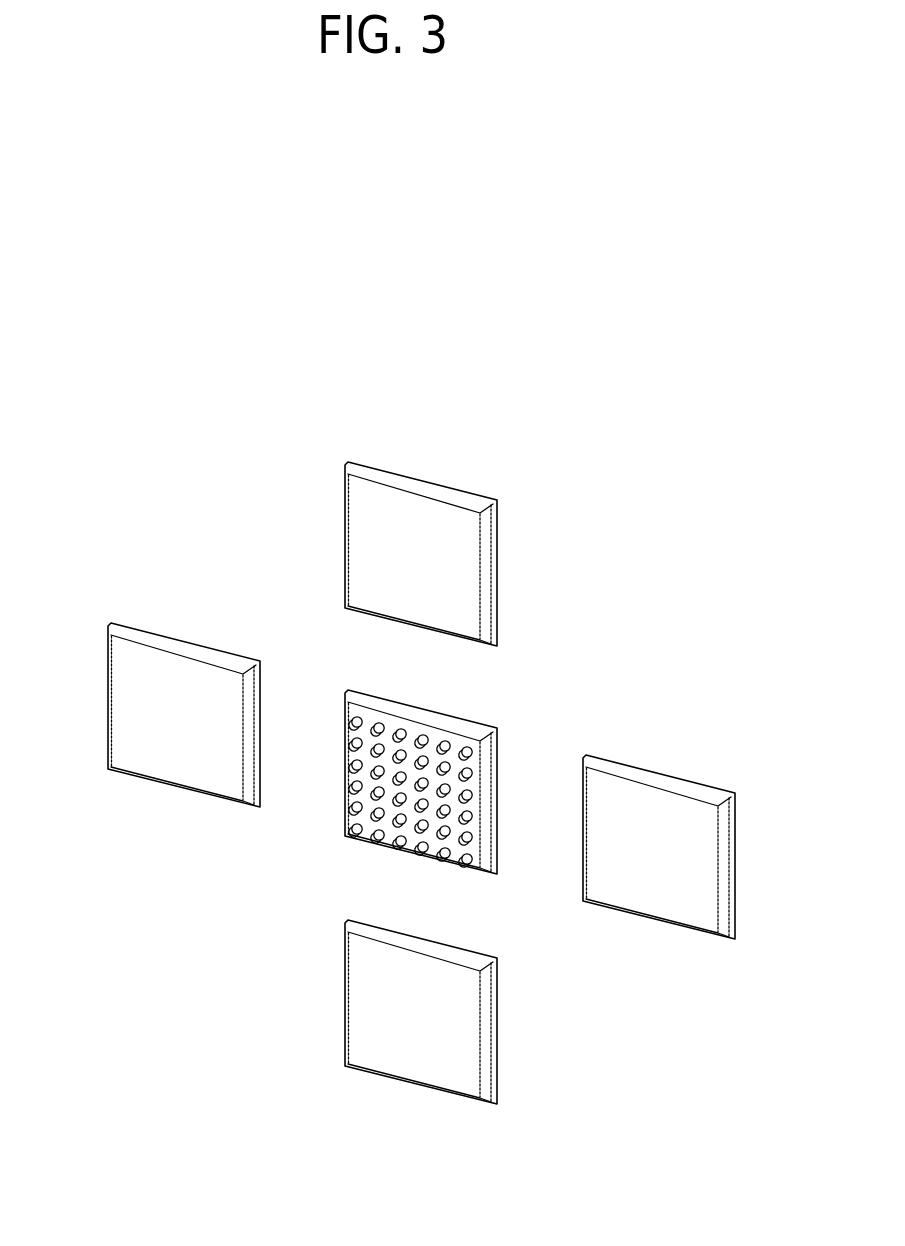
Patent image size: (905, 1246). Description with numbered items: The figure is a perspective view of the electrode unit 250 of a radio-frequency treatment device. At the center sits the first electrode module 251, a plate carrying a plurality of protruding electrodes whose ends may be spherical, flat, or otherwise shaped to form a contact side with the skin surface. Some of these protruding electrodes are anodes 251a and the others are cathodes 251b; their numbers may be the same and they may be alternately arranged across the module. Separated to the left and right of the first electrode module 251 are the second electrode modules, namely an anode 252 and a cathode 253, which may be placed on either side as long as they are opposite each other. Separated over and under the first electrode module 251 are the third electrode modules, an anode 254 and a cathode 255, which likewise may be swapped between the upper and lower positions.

The electrode unit 250 is at (189, 484).
The first electrode module 251 is at (422, 770).
The anodes 251a is at (377, 795).
The cathodes 251b is at (398, 802).
The anode 252 is at (125, 703).
The cathode 253 is at (710, 857).
The anode 254 is at (462, 536).
The cathode 255 is at (472, 1028).